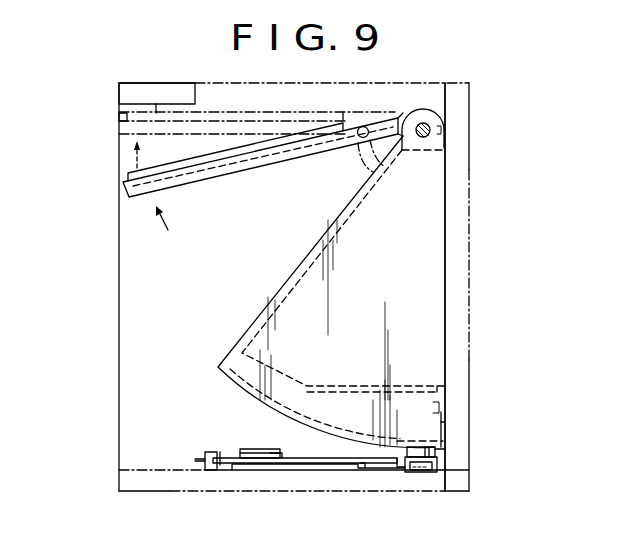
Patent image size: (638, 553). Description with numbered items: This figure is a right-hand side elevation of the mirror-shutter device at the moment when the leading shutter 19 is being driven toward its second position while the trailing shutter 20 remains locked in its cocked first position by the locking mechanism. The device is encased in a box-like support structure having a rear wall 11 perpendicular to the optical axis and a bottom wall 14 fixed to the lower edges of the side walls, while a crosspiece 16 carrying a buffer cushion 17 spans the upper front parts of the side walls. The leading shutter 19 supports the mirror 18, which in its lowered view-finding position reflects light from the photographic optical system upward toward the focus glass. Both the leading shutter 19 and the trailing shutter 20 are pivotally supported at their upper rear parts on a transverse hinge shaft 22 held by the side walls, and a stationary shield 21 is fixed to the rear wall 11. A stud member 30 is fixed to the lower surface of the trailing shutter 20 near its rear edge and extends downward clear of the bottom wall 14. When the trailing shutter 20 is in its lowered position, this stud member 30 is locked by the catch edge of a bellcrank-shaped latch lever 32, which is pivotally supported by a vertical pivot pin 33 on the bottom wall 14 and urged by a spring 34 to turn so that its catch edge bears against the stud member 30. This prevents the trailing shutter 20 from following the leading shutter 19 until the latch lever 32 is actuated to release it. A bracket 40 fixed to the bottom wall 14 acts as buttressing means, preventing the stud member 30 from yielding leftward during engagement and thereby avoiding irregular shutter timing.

The rear wall 11 is at (460, 241).
The bottom wall 14 is at (248, 481).
The crosspiece 16 is at (119, 92).
The buffer cushion 17 is at (120, 110).
The mirror 18 is at (243, 150).
The leading shutter 19 is at (198, 177).
The trailing shutter 20 is at (440, 428).
The stationary shield 21 is at (415, 386).
The hinge shaft 22 is at (430, 138).
The stud member 30 is at (436, 452).
The latch lever 32 is at (336, 468).
The pivot pin 33 is at (255, 449).
The spring 34 is at (224, 466).
The bracket 40 is at (432, 472).